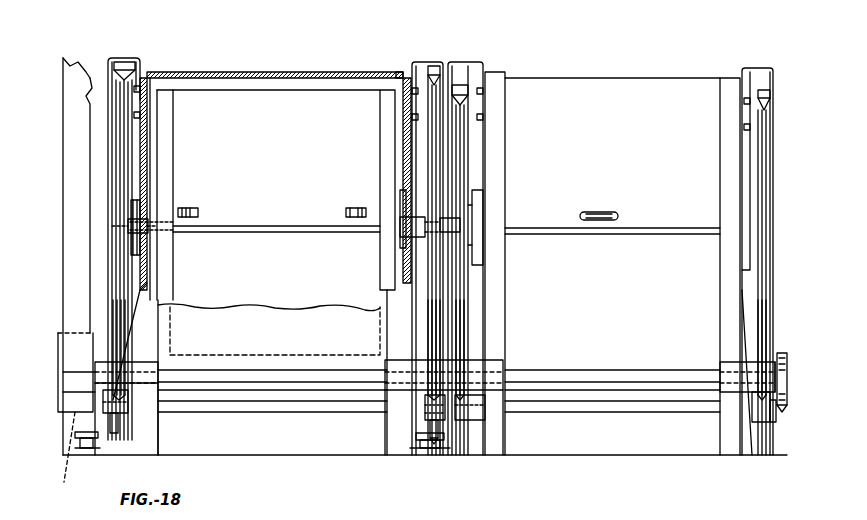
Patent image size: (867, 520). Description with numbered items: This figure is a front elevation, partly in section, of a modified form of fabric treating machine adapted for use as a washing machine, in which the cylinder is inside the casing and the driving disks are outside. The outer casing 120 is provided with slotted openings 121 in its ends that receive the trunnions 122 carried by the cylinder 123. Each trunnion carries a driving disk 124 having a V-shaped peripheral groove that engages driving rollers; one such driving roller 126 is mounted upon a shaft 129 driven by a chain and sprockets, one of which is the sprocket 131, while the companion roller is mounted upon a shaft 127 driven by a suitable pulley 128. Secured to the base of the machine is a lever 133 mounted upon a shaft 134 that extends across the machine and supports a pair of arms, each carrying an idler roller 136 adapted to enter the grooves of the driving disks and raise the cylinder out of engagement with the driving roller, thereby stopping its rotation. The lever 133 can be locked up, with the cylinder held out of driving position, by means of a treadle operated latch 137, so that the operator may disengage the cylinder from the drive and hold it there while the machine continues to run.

The outer casing 120 is at (150, 80).
The slotted openings 121 is at (147, 207).
The trunnions 122 is at (147, 232).
The cylinder 123 is at (260, 105).
The driving disk 124 is at (115, 117).
The driving roller 126 is at (122, 392).
The shaft 127 is at (59, 453).
The pulley 128 is at (58, 405).
The shaft 129 is at (220, 373).
The sprocket 131 is at (784, 412).
The lever 133 is at (112, 407).
The shaft 134 is at (265, 407).
The idler roller 136 is at (432, 398).
The treadle operated latch 137 is at (88, 440).